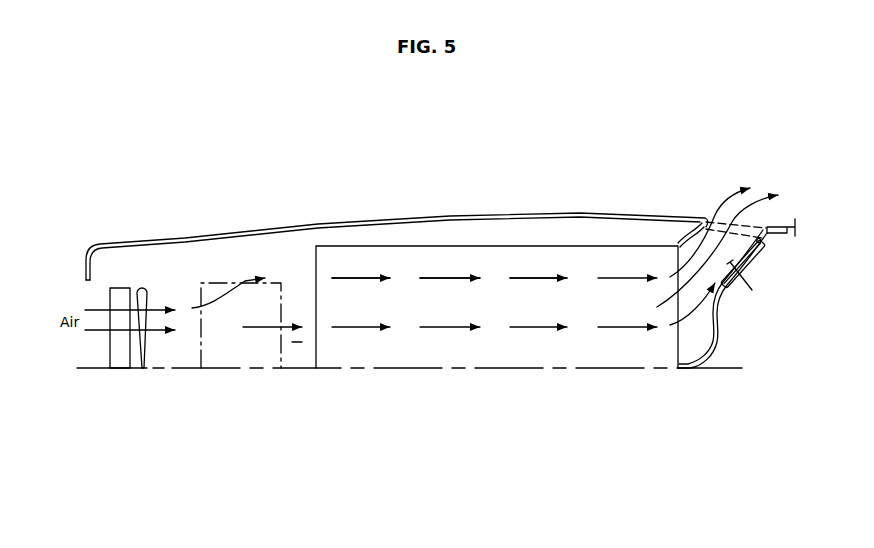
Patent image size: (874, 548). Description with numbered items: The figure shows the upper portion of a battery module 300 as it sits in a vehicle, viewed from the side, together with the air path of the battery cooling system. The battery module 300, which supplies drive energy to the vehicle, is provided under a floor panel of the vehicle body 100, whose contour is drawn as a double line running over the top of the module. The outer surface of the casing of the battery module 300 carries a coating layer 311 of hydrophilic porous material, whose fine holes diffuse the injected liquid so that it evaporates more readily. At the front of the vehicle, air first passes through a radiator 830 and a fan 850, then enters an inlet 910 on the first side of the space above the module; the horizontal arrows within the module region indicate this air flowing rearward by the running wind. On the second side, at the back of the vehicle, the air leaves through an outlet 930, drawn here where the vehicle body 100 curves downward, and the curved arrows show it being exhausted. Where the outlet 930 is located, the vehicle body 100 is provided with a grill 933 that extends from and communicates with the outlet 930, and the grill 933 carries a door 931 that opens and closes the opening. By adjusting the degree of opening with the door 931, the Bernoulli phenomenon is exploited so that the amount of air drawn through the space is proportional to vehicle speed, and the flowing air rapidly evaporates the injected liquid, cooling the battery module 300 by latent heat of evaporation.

The vehicle body 100 is at (203, 237).
The battery module 300 is at (339, 242).
The coating layer 311 is at (430, 253).
The radiator 830 is at (119, 359).
The fan 850 is at (142, 291).
The inlet 910 is at (297, 342).
The outlet 930 is at (752, 290).
The door 931 is at (755, 268).
The grill 933 is at (716, 222).